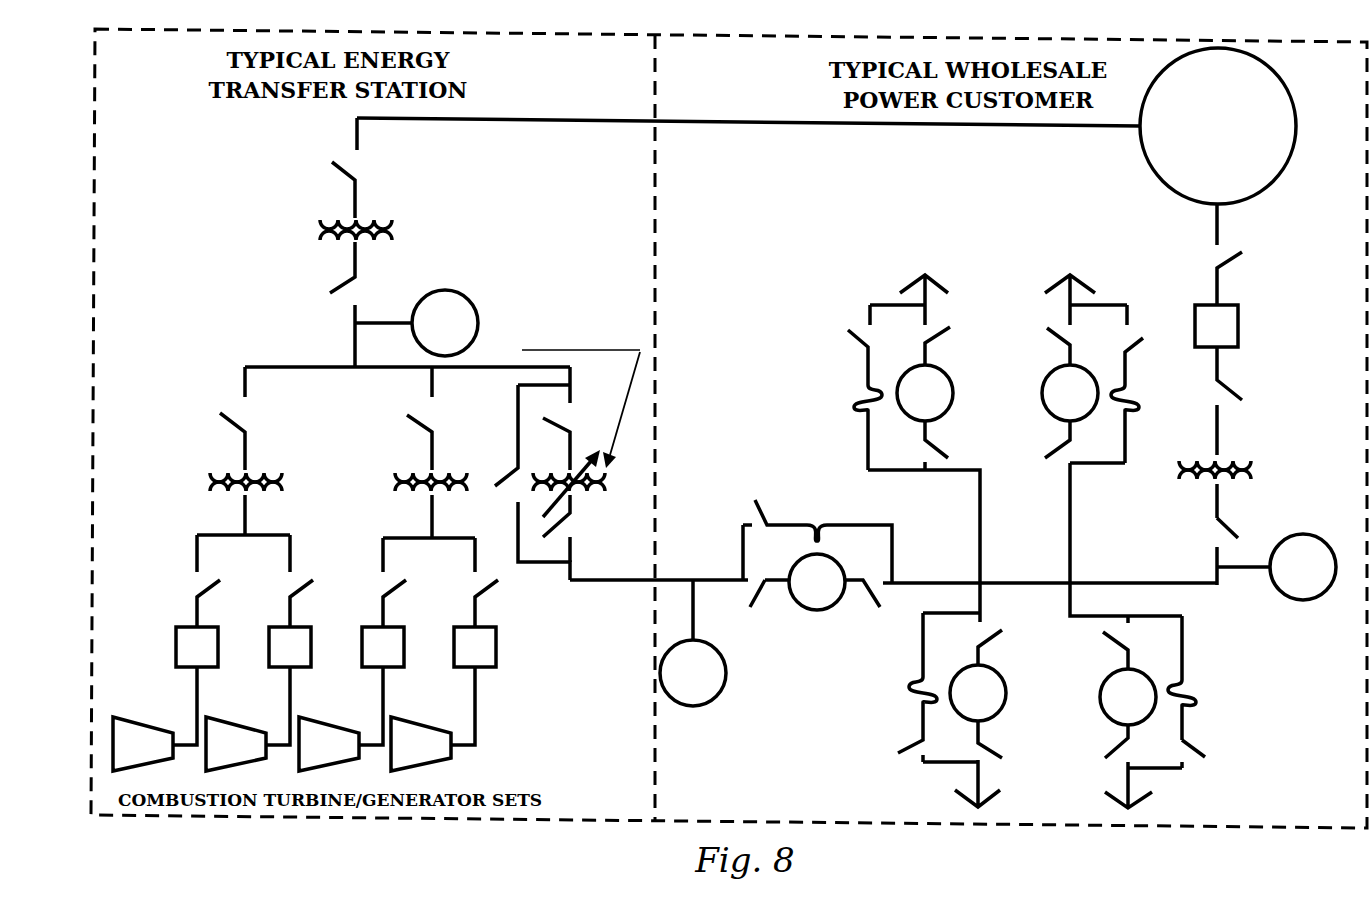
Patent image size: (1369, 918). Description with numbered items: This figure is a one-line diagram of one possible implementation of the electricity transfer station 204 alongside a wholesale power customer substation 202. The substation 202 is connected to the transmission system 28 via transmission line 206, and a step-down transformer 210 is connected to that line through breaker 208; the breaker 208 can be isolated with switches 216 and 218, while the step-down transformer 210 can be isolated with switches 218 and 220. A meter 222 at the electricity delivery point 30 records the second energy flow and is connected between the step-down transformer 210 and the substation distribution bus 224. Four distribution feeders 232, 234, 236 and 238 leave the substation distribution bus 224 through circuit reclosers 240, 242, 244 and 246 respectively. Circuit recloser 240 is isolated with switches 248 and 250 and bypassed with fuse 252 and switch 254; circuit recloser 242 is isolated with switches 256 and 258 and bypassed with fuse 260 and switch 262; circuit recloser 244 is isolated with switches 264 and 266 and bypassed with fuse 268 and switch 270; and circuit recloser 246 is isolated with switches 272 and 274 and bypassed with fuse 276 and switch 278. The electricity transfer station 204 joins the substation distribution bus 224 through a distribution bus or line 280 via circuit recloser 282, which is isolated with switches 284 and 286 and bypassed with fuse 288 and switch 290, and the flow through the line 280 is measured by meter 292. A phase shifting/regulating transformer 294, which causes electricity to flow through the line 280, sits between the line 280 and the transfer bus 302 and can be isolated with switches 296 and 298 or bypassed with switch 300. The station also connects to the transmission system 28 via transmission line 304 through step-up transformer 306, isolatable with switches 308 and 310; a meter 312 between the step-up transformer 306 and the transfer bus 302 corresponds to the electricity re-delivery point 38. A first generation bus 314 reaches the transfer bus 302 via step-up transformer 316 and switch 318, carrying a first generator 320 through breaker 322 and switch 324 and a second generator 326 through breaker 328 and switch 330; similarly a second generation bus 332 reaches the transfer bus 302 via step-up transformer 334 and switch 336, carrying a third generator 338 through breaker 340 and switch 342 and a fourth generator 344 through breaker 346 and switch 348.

The electricity transfer station 204 is at (208, 155).
The wholesale power customer substation 202 is at (782, 180).
The transmission system 28 is at (1205, 188).
The transmission line 304 is at (518, 118).
The switch 308 is at (350, 170).
The step-up transformer 306 is at (360, 218).
The switch 310 is at (338, 289).
The electricity re-delivery point 38 is at (388, 284).
The meter 312 is at (478, 305).
The transfer bus 302 is at (268, 364).
The switch 318 is at (238, 421).
The first generation bus 314 is at (222, 534).
The step-up transformer 316 is at (255, 494).
The switch 336 is at (425, 421).
The second generation bus 332 is at (410, 537).
The step-up transformer 334 is at (443, 495).
The switch 298 is at (560, 424).
The switch 300 is at (505, 478).
The phase shifting/regulating transformer 294 is at (578, 498).
The switch 296 is at (573, 530).
The distribution bus or line 280 is at (612, 582).
The switch 324 is at (190, 585).
The breaker 322 is at (174, 645).
The first generator 320 is at (162, 723).
The switch 330 is at (283, 585).
The breaker 328 is at (267, 645).
The second generator 326 is at (255, 723).
The switch 342 is at (376, 585).
The breaker 340 is at (360, 645).
The third generator 338 is at (347, 723).
The switch 348 is at (468, 585).
The breaker 346 is at (452, 645).
The fourth generator 344 is at (440, 723).
The transmission line 206 is at (1220, 220).
The switch 216 is at (1226, 262).
The breaker 208 is at (1239, 320).
The switch 218 is at (1235, 392).
The step-down transformer 210 is at (1213, 486).
The switch 220 is at (1214, 558).
The substation distribution bus 224 is at (1157, 582).
The electricity delivery point 30 is at (1232, 592).
The meter 222 is at (1305, 600).
The distribution feeder 234 is at (900, 285).
The switch 258 is at (948, 327).
The circuit recloser 242 is at (950, 398).
The switch 256 is at (945, 455).
The switch 262 is at (848, 335).
The fuse 260 is at (857, 400).
The distribution feeder 238 is at (1048, 285).
The switch 274 is at (1047, 333).
The circuit recloser 246 is at (1042, 392).
The switch 272 is at (1048, 462).
The switch 278 is at (1143, 345).
The fuse 276 is at (1128, 398).
The switch 290 is at (767, 513).
The fuse 288 is at (815, 514).
The circuit recloser 282 is at (818, 614).
The switch 286 is at (772, 605).
The switch 284 is at (868, 604).
The meter 292 is at (728, 675).
The switch 264 is at (990, 635).
The circuit recloser 244 is at (1005, 700).
The switch 266 is at (1000, 750).
The fuse 268 is at (915, 692).
The switch 270 is at (912, 745).
The distribution feeder 236 is at (950, 790).
The switch 248 is at (1105, 648).
The circuit recloser 240 is at (1100, 694).
The switch 250 is at (1110, 756).
The fuse 252 is at (1192, 692).
The switch 254 is at (1200, 755).
The distribution feeder 232 is at (1110, 798).